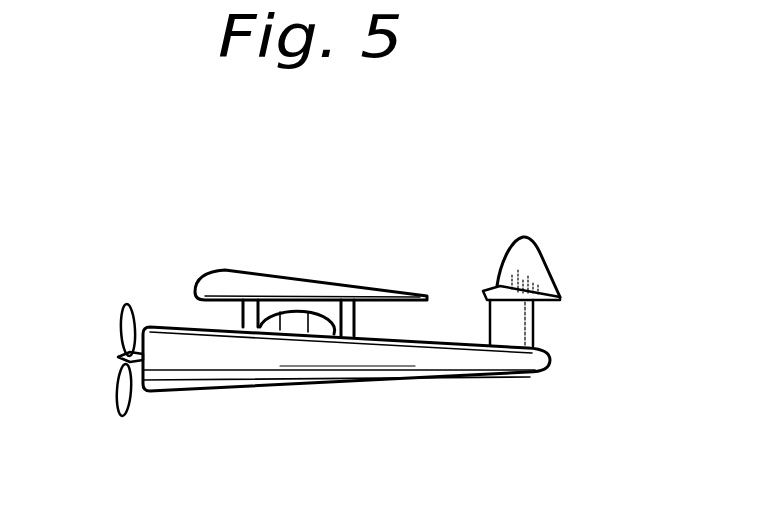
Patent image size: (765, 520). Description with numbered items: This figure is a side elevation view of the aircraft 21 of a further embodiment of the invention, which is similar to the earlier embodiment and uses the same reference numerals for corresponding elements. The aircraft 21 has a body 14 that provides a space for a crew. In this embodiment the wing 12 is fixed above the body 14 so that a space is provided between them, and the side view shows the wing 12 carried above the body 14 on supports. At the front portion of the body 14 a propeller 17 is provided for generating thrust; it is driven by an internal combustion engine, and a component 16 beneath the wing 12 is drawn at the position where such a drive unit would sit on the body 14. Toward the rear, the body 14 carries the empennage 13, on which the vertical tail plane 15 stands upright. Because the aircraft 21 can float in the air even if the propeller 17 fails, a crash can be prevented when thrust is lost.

The wing 12 is at (288, 283).
The empennage 13 is at (545, 303).
The body 14 is at (477, 360).
The vertical tail plane 15 is at (534, 263).
The engine 16 is at (293, 332).
The propeller 17 is at (127, 325).
The aircraft 21 is at (510, 211).